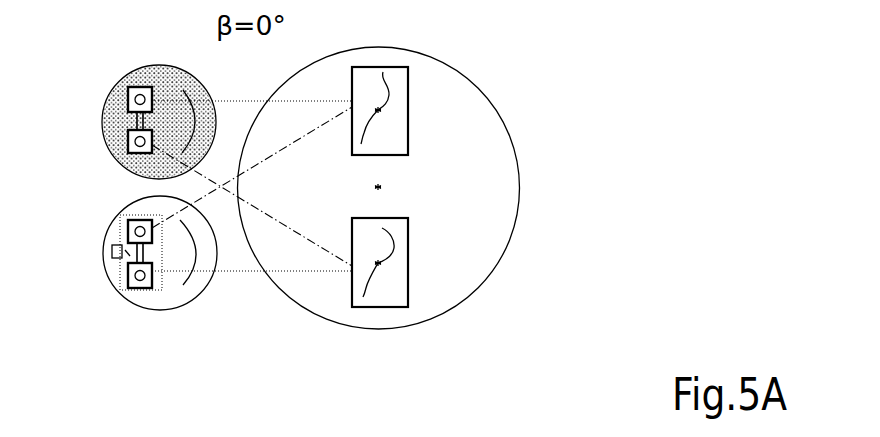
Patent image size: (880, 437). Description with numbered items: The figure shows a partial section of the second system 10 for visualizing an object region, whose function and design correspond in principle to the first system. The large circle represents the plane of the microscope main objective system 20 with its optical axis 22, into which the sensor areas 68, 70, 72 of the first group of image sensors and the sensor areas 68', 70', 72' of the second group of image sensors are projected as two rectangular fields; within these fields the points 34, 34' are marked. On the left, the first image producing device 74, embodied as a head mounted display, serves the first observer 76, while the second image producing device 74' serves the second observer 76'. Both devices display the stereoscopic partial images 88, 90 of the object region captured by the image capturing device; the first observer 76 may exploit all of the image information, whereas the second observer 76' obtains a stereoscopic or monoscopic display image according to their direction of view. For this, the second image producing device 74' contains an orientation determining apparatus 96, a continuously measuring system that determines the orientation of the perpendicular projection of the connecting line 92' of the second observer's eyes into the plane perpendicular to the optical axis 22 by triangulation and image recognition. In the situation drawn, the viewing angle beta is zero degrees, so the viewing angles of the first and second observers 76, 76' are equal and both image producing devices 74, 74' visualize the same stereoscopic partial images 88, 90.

The system for visualizing an object region 10 is at (522, 306).
The microscope main objective system 20 is at (510, 243).
The optical axis 22 is at (378, 187).
The outlet opening 34 is at (457, 62).
The outlet opening 34' is at (355, 326).
The first sensor area 68 is at (496, 110).
The sensor area 70 is at (496, 110).
The sensor area 72 is at (496, 110).
The second sensor area 68' is at (451, 308).
The sensor area 70' is at (451, 308).
The sensor area 72' is at (451, 308).
The first image producing device 74 is at (140, 108).
The second image producing device 74' is at (117, 284).
The first observer 76 is at (159, 95).
The second observer 76' is at (160, 286).
The stereoscopic partial image 88 is at (140, 87).
The stereoscopic partial image 90 is at (128, 147).
The connecting line of the eyes 92' is at (86, 277).
The orientation determining apparatus 96 is at (112, 250).